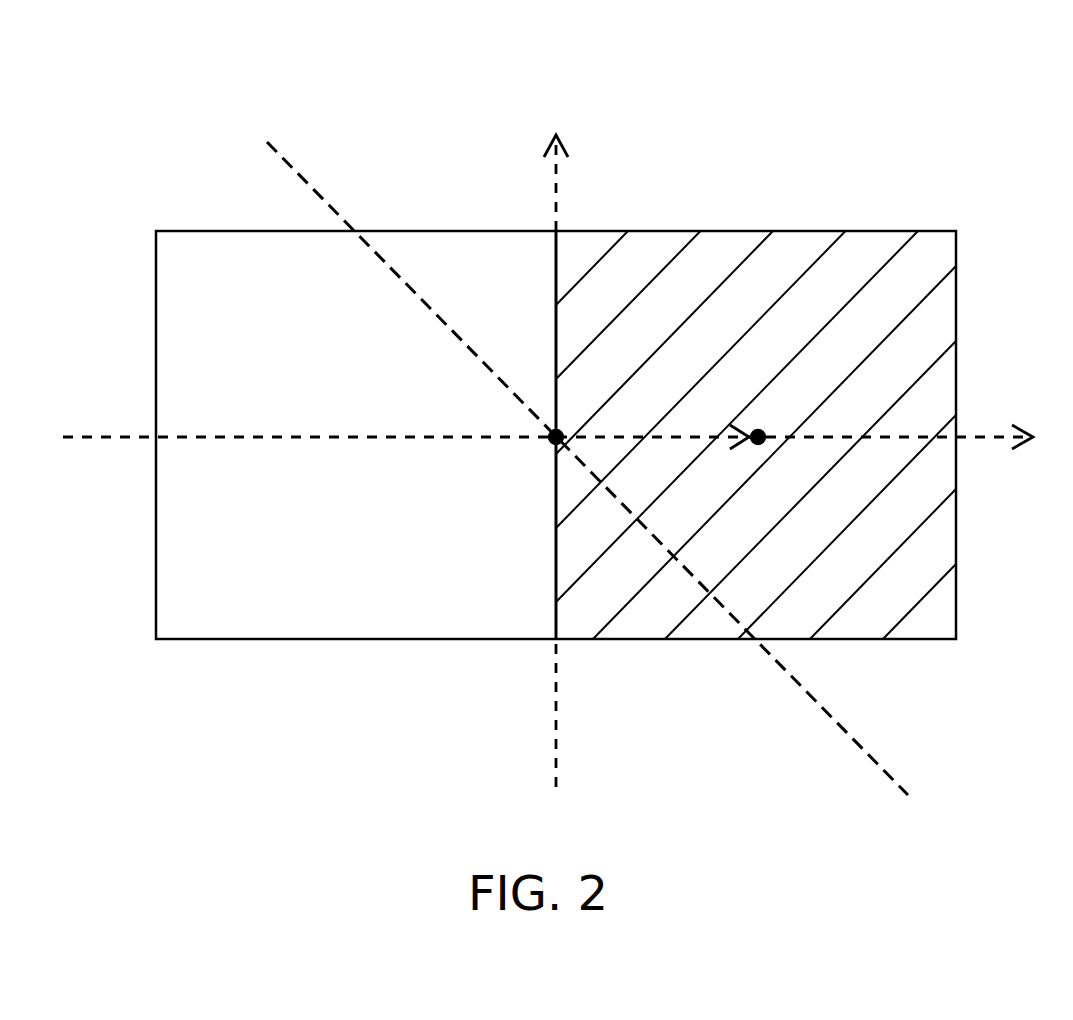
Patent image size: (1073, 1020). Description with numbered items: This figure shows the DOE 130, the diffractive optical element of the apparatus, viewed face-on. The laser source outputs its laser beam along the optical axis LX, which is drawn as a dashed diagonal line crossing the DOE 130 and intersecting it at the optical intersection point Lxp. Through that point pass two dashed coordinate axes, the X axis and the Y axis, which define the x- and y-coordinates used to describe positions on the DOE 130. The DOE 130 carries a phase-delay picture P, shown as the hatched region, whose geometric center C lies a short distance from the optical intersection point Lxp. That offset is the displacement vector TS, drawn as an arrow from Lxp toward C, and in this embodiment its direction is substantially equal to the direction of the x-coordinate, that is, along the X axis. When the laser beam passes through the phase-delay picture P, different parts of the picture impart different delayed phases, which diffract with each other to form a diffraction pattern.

The DOE 130 is at (62, 65).
The phase-delay picture P is at (873, 240).
The geometric center C is at (766, 423).
The displacement vector TS is at (700, 452).
The optical intersection point Lxp is at (531, 451).
The optical axis LX is at (600, 490).
The X axis X is at (565, 439).
The Y axis Y is at (556, 439).